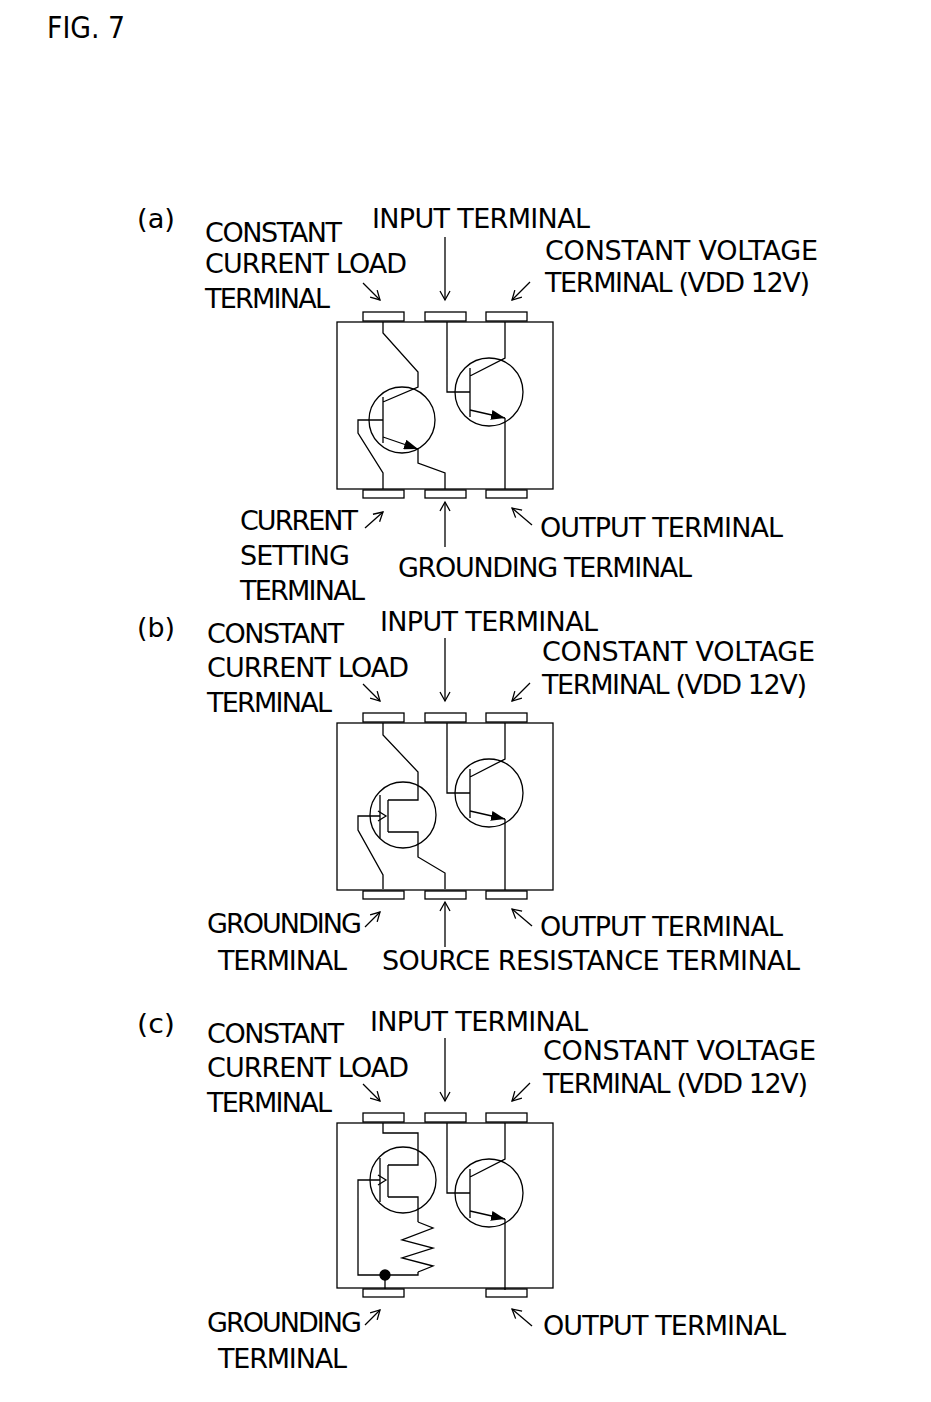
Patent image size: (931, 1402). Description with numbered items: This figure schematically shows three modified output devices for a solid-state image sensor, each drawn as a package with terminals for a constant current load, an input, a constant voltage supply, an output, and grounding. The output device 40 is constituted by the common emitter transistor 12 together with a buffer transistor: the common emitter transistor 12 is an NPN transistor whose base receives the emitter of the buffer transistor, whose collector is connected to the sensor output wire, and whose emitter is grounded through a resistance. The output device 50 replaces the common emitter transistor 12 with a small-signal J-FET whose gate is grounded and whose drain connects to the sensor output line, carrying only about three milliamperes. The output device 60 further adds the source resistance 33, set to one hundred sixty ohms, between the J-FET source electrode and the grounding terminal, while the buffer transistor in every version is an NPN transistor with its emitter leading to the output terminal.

The common emitter transistor 12 is at (357, 447).
The source resistance 33 is at (438, 1243).
The output device 40 is at (270, 388).
The output device 50 is at (270, 795).
The output device 60 is at (270, 1190).